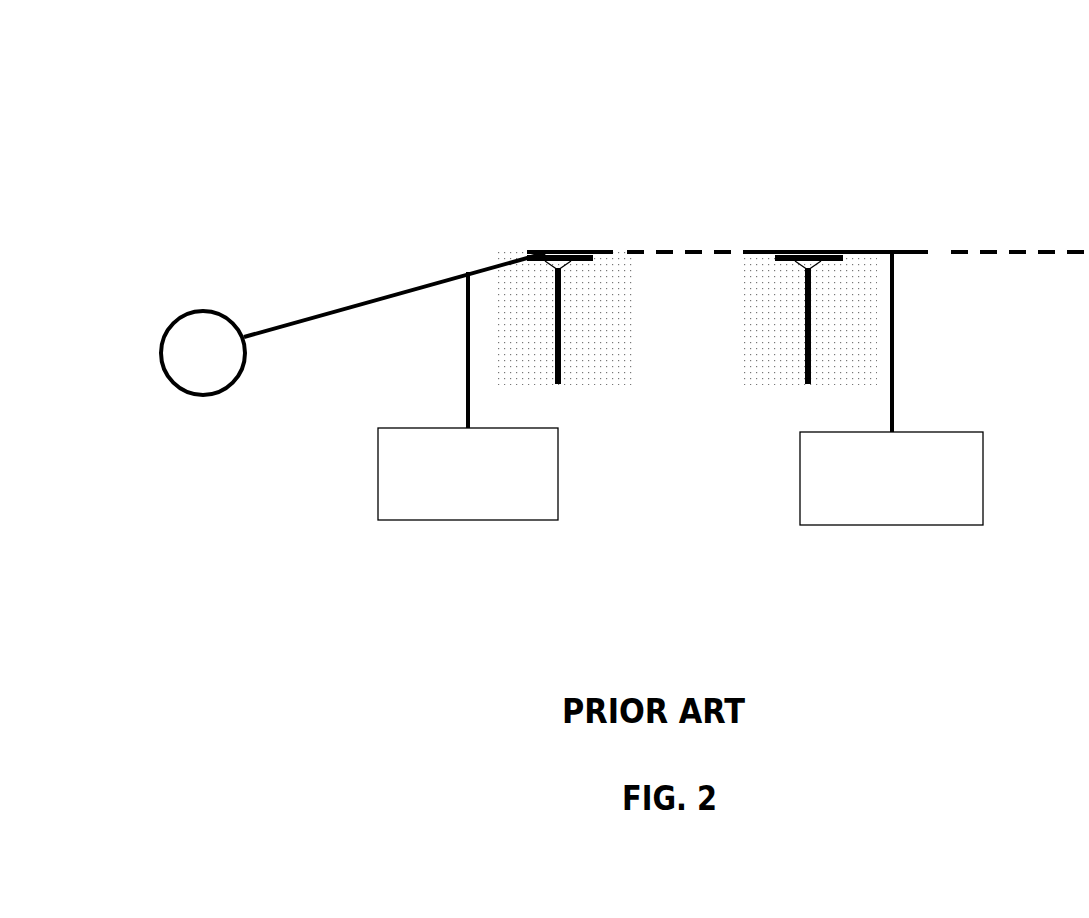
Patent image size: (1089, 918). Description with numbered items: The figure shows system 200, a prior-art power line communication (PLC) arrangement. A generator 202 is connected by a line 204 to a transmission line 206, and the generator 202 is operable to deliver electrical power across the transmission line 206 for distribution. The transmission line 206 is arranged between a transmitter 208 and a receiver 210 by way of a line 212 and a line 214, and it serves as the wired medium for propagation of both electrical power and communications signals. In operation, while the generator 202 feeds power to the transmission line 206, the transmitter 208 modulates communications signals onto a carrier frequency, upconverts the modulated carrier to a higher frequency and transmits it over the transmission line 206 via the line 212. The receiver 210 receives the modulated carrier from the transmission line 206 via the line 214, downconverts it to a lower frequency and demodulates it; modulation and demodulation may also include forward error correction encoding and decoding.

The system 200 is at (185, 120).
The generator 202 is at (201, 311).
The line 204 is at (373, 293).
The transmission line 206 is at (805, 303).
The transmitter 208 is at (469, 522).
The receiver 210 is at (893, 527).
The line 212 is at (466, 340).
The line 214 is at (895, 340).